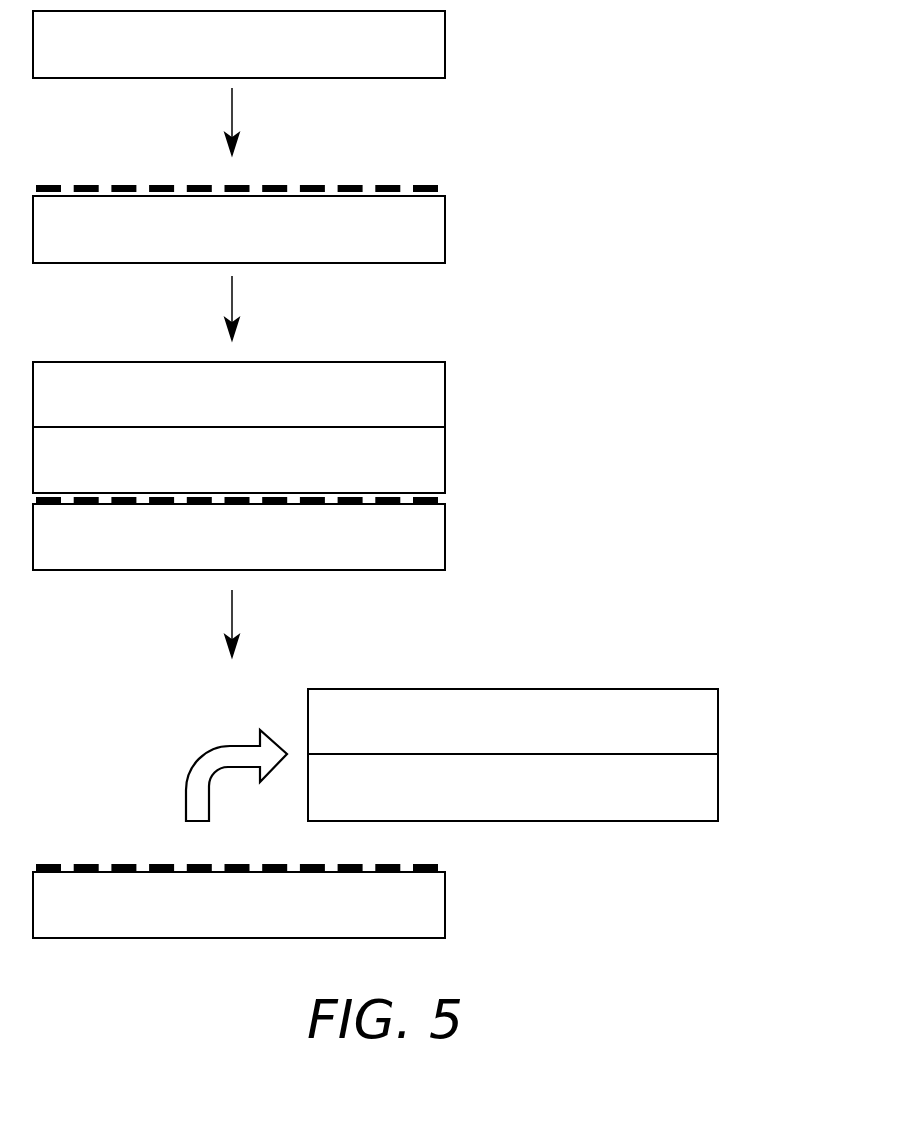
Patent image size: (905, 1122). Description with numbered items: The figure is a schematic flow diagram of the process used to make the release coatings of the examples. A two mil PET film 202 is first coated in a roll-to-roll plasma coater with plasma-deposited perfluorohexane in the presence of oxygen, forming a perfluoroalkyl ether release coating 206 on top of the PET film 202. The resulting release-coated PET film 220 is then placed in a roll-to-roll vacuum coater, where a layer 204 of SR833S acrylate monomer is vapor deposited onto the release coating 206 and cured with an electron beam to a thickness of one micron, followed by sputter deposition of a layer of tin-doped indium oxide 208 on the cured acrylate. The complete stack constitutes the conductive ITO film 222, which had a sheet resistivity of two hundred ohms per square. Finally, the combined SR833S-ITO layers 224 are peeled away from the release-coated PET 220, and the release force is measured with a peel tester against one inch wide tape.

The PET film 202 is at (252, 59).
The layer of SR833S 204 is at (252, 474).
The perfluoroalkyl ether release coating 206 is at (437, 189).
The layer of tin-doped indium oxide (ITO) 208 is at (252, 406).
The release-coated PET film 220 is at (612, 558).
The conductive ITO film 222 is at (602, 475).
The combined SR833S-ITO layers 224 is at (777, 757).